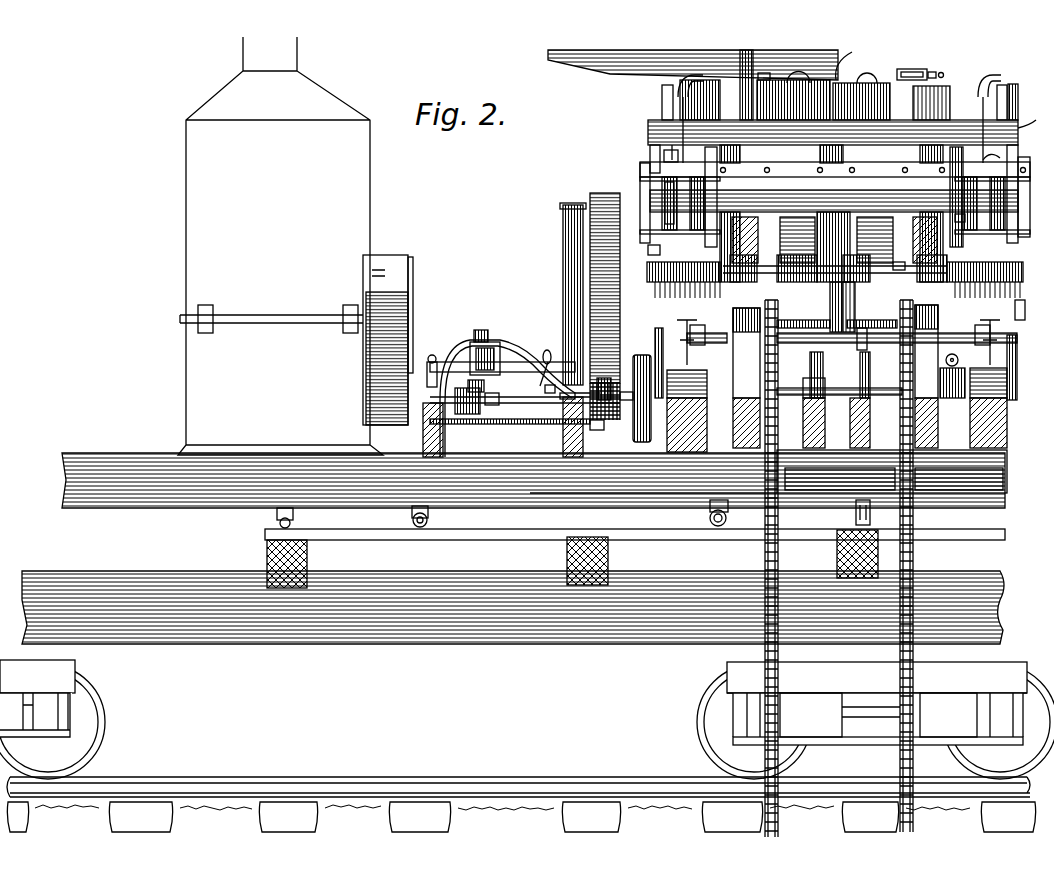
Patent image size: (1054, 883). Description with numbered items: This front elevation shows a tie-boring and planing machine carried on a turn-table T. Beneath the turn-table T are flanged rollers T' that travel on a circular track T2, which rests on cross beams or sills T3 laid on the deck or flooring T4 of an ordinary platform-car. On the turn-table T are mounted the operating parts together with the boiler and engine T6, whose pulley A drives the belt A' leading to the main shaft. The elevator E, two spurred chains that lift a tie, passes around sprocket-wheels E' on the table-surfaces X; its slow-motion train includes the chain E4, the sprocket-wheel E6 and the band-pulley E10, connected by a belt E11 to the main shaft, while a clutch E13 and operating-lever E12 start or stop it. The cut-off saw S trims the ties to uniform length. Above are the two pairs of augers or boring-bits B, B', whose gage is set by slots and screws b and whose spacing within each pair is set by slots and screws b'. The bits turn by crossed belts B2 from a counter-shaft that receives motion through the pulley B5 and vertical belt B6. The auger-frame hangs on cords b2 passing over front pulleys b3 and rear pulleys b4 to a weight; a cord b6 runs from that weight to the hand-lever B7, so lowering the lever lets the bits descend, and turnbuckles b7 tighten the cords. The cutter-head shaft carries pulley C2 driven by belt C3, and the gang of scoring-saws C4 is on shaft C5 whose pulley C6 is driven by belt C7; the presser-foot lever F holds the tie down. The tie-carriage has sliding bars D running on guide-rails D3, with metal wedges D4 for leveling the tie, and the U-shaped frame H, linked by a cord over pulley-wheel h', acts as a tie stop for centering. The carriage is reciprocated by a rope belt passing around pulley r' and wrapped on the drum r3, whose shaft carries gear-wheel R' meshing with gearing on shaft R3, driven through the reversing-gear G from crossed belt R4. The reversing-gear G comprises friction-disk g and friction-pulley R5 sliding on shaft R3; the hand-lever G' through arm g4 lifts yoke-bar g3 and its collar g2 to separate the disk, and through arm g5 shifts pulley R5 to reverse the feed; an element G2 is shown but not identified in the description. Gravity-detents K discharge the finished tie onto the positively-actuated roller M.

The boiler and engine T6 is at (280, 246).
The belt A' is at (296, 299).
The pulley A is at (396, 340).
The flanged rollers T' is at (533, 485).
The circular track T2 is at (576, 535).
The turn-table T is at (573, 514).
The cross beams or sills T3 is at (312, 560).
The deck or flooring T4 is at (520, 634).
The elevator E is at (835, 568).
The hand-lever B7 is at (618, 66).
The front pulleys b3 is at (684, 75).
The turnbuckles b7 is at (764, 73).
The rear pulleys b4 is at (800, 75).
The cord b6 is at (847, 54).
The suspending-cords b2 is at (657, 123).
The slots and screws b' is at (850, 139).
The slots and screws b is at (835, 161).
The augers or boring-bits B is at (830, 199).
The augers or boring-bits B' is at (640, 199).
The crossed belts B2 is at (652, 250).
The pulley B5 is at (595, 205).
The vertical belt B6 is at (595, 250).
The cut-off saw S is at (572, 330).
The belt C7 is at (795, 210).
The axial shaft C5 is at (815, 262).
The belt C3 is at (897, 240).
The presser-foot lever F is at (893, 266).
The scoring-saws C4 is at (835, 288).
The metal wedges D4 is at (698, 328).
The gravity-detents K is at (658, 328).
The sliding bars D is at (1000, 335).
The guide-rails D3 is at (1028, 298).
The pulley C6 is at (828, 310).
The U-shaped frame H is at (837, 315).
The pulley C2 is at (858, 307).
The pulley-wheel h' is at (870, 323).
The table-surfaces X is at (835, 351).
The positively-actuated roller M is at (945, 372).
The pulley r' is at (835, 373).
The sprocket-wheels E' is at (839, 392).
The belt E11 is at (803, 380).
The drum r3 is at (806, 400).
The sprocket-wheel E6 is at (690, 453).
The chain E4 is at (744, 452).
The clutch E13 is at (606, 392).
The band-pulley E10 is at (642, 442).
The gear-wheel R' is at (596, 448).
The operating-lever E12 is at (566, 420).
The reversing mechanism G is at (518, 387).
The collar g2 is at (485, 340).
The yoke-bar g3 is at (530, 362).
The arm g4 is at (550, 363).
The crossed belt R4 is at (432, 356).
The friction-disk g is at (468, 385).
The shaft R3 is at (508, 404).
The friction-pulley R5 is at (465, 414).
The arm g5 is at (490, 406).
The hand-lever G' is at (535, 414).
The arm G2 is at (565, 400).